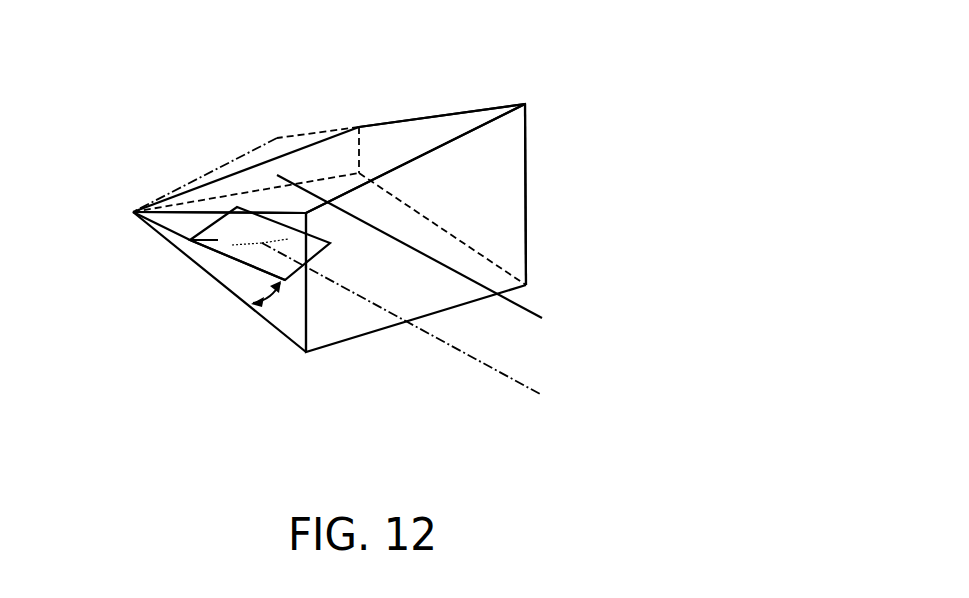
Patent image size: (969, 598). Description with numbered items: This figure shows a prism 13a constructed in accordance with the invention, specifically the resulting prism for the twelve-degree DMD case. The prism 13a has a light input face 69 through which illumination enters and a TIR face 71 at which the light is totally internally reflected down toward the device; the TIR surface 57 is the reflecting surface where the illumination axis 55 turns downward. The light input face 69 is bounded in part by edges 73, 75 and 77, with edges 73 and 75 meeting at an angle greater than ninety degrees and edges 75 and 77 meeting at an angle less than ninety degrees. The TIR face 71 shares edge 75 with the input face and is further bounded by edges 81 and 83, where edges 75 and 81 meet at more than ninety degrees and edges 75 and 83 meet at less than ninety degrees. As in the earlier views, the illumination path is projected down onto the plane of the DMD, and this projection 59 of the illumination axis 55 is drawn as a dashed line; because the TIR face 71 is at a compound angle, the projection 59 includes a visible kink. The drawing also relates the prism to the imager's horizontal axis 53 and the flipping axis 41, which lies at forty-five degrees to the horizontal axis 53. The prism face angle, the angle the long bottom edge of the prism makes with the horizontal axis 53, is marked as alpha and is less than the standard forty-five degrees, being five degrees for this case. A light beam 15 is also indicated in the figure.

The prism 13a is at (583, 68).
The light beam 15 is at (218, 240).
The flipping axis 41 is at (250, 243).
The horizontal axis 53 is at (238, 258).
The illumination axis 55 is at (527, 308).
The TIR surface 57 is at (262, 243).
The projection of the illumination axis 59 is at (485, 370).
The light input face 69 is at (552, 218).
The TIR face 71 is at (411, 100).
The edge 73 is at (305, 313).
The edge 75 is at (440, 148).
The edge 77 is at (527, 153).
The edge 81 is at (187, 213).
The edge 83 is at (472, 110).